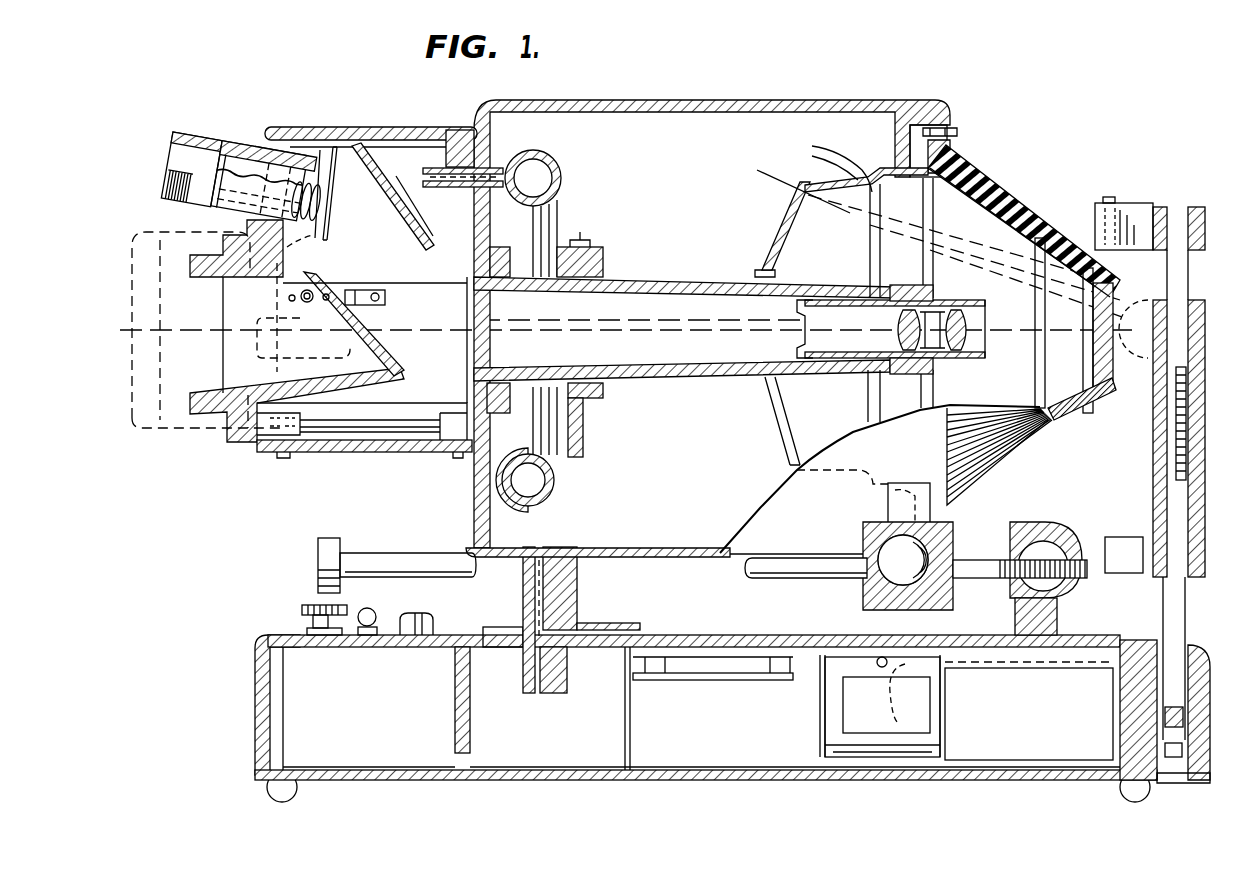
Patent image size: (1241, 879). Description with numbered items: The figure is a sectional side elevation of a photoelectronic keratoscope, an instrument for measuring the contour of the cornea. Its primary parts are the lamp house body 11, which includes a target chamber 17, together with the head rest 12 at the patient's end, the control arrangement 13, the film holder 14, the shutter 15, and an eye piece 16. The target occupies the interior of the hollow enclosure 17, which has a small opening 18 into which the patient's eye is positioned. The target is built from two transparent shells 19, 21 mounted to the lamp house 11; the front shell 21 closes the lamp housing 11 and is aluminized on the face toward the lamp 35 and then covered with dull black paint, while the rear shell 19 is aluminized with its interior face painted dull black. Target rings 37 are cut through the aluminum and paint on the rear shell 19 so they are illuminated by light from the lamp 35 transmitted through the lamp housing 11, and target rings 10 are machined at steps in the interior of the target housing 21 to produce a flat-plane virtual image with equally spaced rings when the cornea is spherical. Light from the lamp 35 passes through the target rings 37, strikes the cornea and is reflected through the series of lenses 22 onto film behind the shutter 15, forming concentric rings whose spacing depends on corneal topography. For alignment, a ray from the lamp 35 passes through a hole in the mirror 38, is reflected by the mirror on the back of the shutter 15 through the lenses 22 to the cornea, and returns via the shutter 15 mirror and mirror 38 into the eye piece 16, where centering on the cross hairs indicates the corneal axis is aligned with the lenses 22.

The target rings 10 is at (1043, 240).
The lamp house body 11 is at (747, 100).
The head rest 12 is at (1196, 250).
The control arrangement 13 is at (373, 553).
The film holder 14 is at (152, 430).
The shutter 15 is at (398, 371).
The eye piece 16 is at (172, 150).
The target chamber 17 is at (994, 172).
The small opening 18 is at (1115, 378).
The rear shell 19 is at (785, 221).
The front shell 21 is at (1014, 206).
The lenses 22 is at (955, 365).
The lamp 35 is at (561, 177).
The target rings 37 is at (829, 164).
The mirror 38 is at (368, 180).